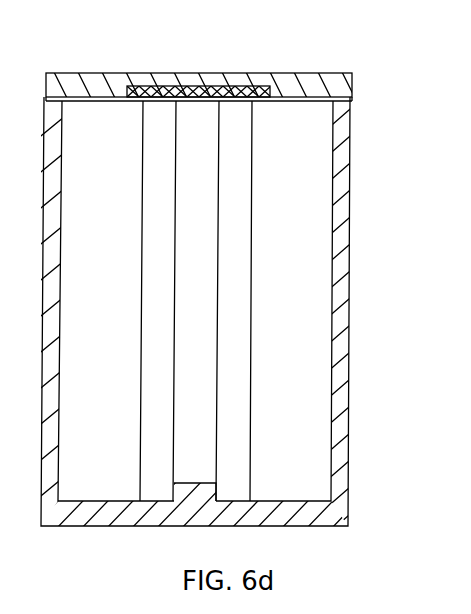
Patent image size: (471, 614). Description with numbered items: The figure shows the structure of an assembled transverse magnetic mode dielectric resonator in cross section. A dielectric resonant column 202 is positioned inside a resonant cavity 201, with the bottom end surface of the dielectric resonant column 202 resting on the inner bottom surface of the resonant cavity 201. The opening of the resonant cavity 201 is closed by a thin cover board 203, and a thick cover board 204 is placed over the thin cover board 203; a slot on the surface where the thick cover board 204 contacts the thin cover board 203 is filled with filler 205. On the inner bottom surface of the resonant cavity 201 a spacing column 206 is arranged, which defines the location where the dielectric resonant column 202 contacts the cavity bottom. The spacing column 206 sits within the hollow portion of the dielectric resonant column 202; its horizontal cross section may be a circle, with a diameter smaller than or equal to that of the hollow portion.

The resonant cavity 201 is at (345, 417).
The dielectric resonant column 202 is at (252, 352).
The thin cover board 203 is at (350, 101).
The thick cover board 204 is at (302, 82).
The filler 205 is at (150, 97).
The spacing column 206 is at (216, 490).